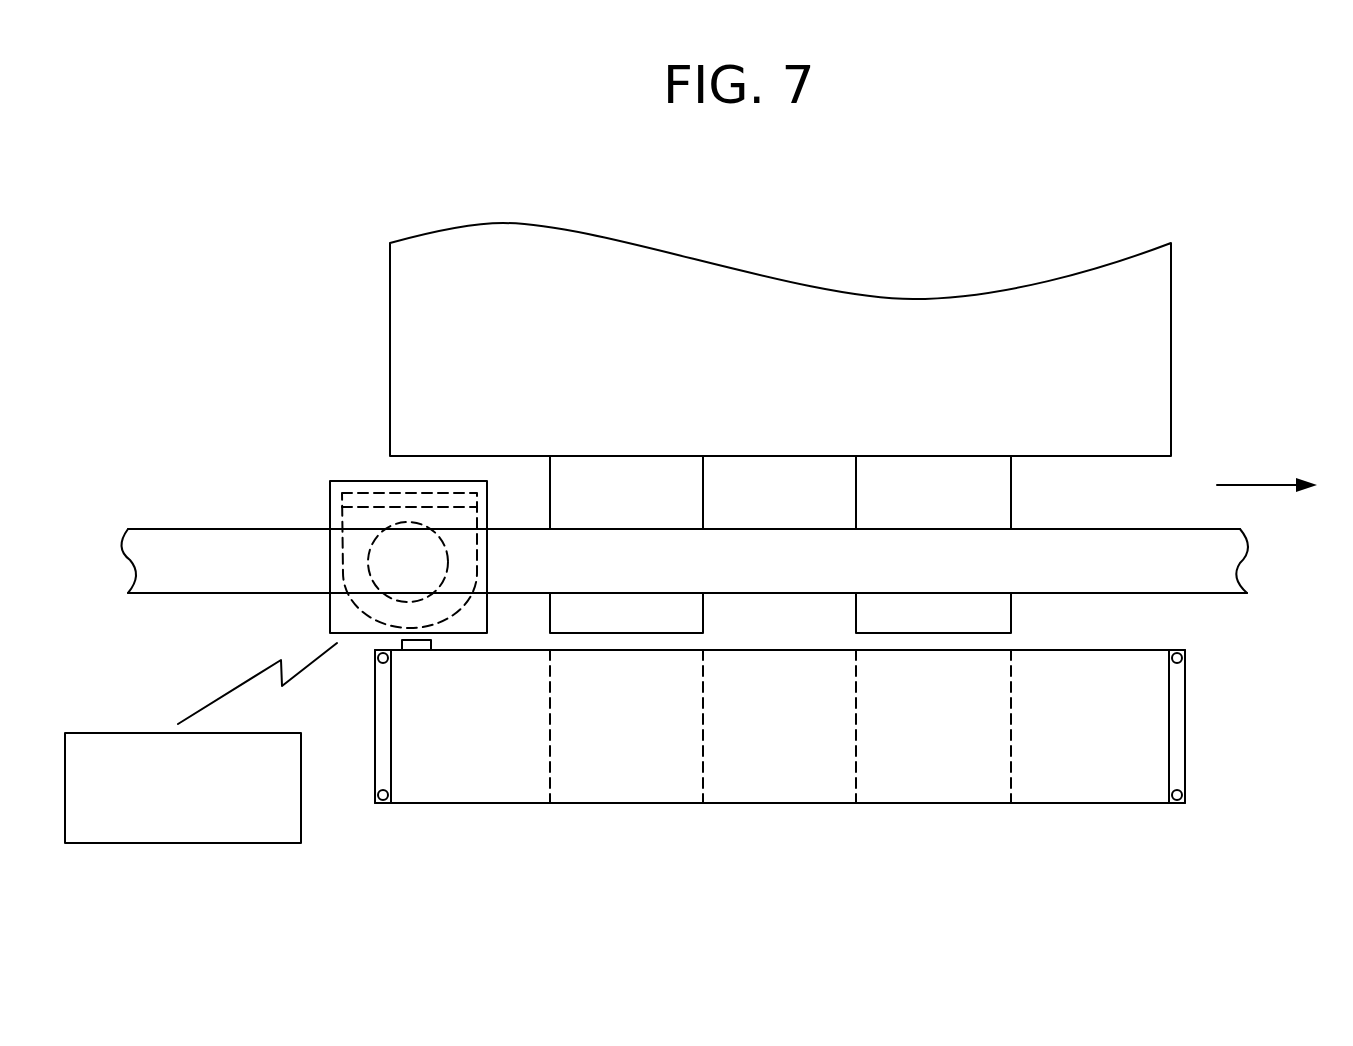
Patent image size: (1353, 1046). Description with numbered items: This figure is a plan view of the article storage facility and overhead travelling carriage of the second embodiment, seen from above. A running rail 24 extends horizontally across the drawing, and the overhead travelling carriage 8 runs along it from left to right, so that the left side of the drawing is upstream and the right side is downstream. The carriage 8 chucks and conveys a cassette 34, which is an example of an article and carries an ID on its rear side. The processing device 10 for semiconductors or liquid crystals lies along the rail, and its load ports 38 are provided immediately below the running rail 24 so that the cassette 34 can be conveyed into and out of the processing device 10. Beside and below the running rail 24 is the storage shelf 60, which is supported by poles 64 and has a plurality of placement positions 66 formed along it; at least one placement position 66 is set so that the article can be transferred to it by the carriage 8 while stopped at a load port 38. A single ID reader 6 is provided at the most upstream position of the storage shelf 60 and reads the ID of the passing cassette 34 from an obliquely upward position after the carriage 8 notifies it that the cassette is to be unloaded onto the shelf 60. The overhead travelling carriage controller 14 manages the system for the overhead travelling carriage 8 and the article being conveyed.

The ID reader 6 is at (412, 650).
The overhead travelling carriage 8 is at (302, 491).
The processing device 10 is at (1138, 368).
The overhead travelling carriage controller 14 is at (217, 828).
The running rail 24 is at (1220, 578).
The cassette 34 is at (357, 612).
The load port 38 is at (683, 493).
The storage shelf 60 is at (805, 828).
The pole 64 is at (378, 660).
The placement position 66 is at (463, 773).